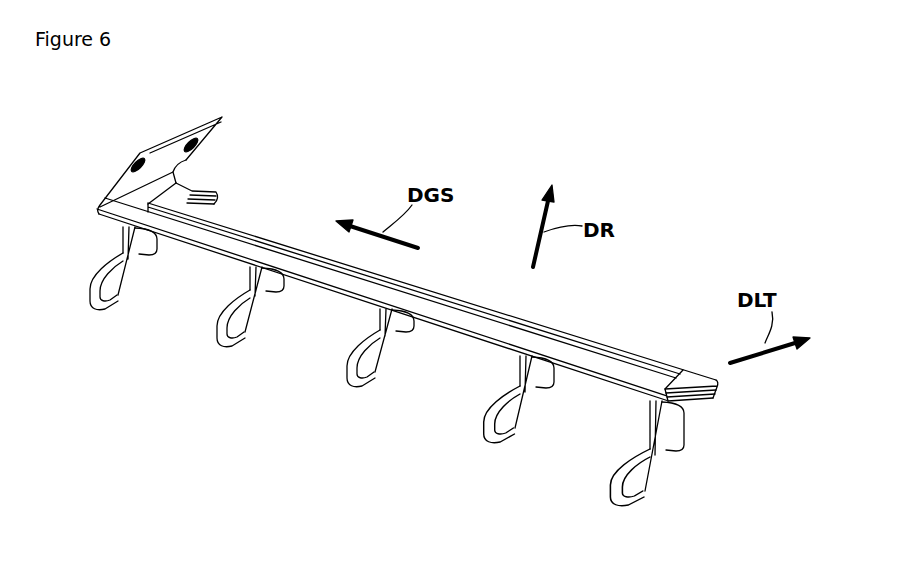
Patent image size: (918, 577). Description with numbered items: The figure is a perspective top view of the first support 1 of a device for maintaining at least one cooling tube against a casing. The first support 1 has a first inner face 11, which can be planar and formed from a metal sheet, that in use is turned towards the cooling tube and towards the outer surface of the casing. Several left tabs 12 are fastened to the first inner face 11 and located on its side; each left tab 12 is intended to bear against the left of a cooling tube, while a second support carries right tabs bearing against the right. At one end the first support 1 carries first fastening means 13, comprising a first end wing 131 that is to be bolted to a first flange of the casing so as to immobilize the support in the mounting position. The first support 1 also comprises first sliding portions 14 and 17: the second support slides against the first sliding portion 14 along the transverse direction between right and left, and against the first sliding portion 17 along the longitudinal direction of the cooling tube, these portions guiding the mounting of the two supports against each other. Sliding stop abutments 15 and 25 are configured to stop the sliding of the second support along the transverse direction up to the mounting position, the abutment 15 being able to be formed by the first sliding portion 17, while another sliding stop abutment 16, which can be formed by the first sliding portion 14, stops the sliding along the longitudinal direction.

The first support 1 is at (439, 303).
The first inner face 11 is at (462, 334).
The left tab 12 is at (108, 282).
The first fastening means 13 is at (191, 156).
The first end wing 131 is at (170, 157).
The first sliding portion 14 is at (527, 319).
The sliding stop abutment 15 is at (218, 193).
The other sliding stop abutment 16 is at (418, 281).
The first sliding portion 17 is at (700, 400).
The sliding stop abutment 25 is at (722, 393).